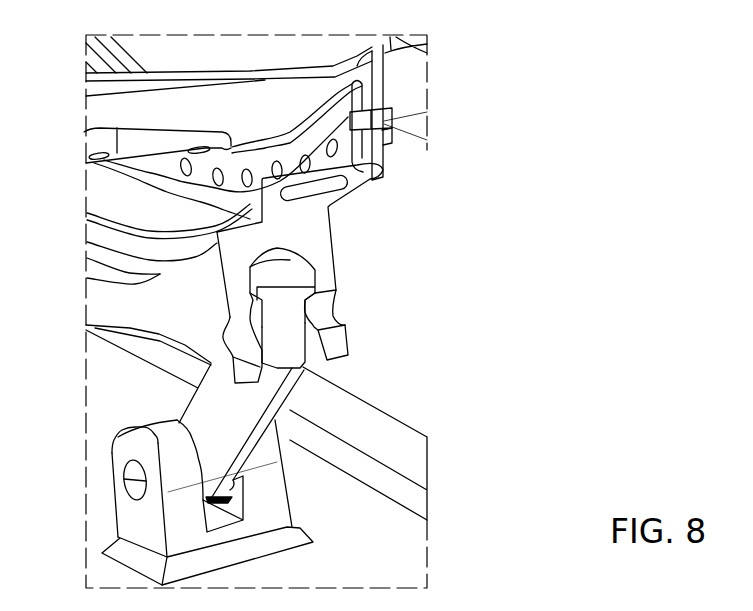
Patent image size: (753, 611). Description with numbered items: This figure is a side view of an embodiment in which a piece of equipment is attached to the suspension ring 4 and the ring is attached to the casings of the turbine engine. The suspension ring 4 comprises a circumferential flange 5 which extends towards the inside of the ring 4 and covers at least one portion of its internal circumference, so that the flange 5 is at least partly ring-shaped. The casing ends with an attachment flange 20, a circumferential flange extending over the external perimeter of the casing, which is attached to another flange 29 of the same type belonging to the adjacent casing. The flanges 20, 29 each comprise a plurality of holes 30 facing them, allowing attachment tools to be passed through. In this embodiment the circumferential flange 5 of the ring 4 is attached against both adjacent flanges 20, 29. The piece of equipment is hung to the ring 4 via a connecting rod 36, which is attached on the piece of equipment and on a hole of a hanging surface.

The suspension ring 4 is at (138, 313).
The circumferential flange 5 is at (186, 183).
The attachment flange 20 is at (392, 187).
The flange 29 is at (410, 150).
The holes 30 is at (394, 121).
The connecting rod 36 is at (185, 424).